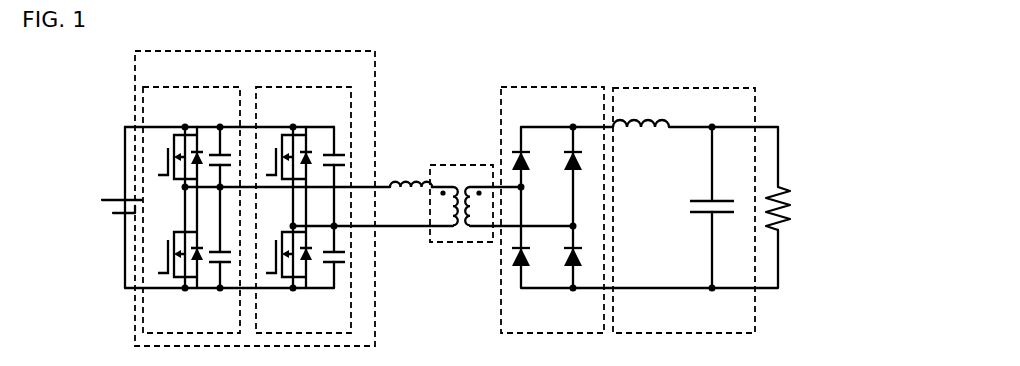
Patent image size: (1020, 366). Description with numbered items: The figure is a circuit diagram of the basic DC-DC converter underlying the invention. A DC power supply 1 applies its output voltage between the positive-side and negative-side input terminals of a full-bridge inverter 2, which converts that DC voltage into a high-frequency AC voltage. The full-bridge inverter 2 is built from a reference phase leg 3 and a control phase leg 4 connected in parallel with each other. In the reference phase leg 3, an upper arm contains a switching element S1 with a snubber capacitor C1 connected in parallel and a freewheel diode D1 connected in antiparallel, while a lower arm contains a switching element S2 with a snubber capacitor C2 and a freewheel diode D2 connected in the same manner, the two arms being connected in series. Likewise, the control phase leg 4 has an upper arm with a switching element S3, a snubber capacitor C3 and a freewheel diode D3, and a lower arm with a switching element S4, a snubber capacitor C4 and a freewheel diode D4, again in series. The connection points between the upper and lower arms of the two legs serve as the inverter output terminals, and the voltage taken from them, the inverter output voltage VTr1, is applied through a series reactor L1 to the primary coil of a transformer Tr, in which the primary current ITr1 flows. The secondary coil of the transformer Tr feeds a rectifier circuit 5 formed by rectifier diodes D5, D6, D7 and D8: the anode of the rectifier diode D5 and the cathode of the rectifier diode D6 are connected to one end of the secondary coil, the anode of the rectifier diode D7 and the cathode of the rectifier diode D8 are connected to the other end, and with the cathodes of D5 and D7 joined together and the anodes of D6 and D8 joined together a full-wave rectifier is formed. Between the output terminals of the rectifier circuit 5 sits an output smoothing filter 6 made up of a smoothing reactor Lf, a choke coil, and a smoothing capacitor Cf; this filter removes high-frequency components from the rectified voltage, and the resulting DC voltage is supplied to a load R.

The DC power supply 1 is at (113, 213).
The full-bridge inverter 2 is at (376, 104).
The reference phase leg 3 is at (162, 86).
The control phase leg 4 is at (290, 86).
The rectifier circuit 5 is at (543, 87).
The output smoothing filter 6 is at (670, 88).
The switching element S1 is at (172, 134).
The switching element S2 is at (172, 280).
The switching element S3 is at (281, 134).
The switching element S4 is at (282, 280).
The freewheel diode D1 is at (197, 127).
The freewheel diode D2 is at (197, 288).
The freewheel diode D3 is at (306, 127).
The freewheel diode D4 is at (306, 288).
The rectifier diode D5 is at (521, 150).
The rectifier diode D6 is at (520, 270).
The rectifier diode D7 is at (573, 150).
The rectifier diode D8 is at (573, 268).
The snubber capacitor C1 is at (221, 127).
The snubber capacitor C2 is at (221, 288).
The snubber capacitor C3 is at (335, 127).
The snubber capacitor C4 is at (335, 288).
The series reactor L1 is at (407, 181).
The transformer Tr is at (455, 165).
The inverter output voltage VTr1 is at (382, 198).
The transformer primary current ITr1 is at (415, 234).
The smoothing reactor Lf is at (640, 125).
The smoothing capacitor Cf is at (719, 201).
The load R is at (782, 194).